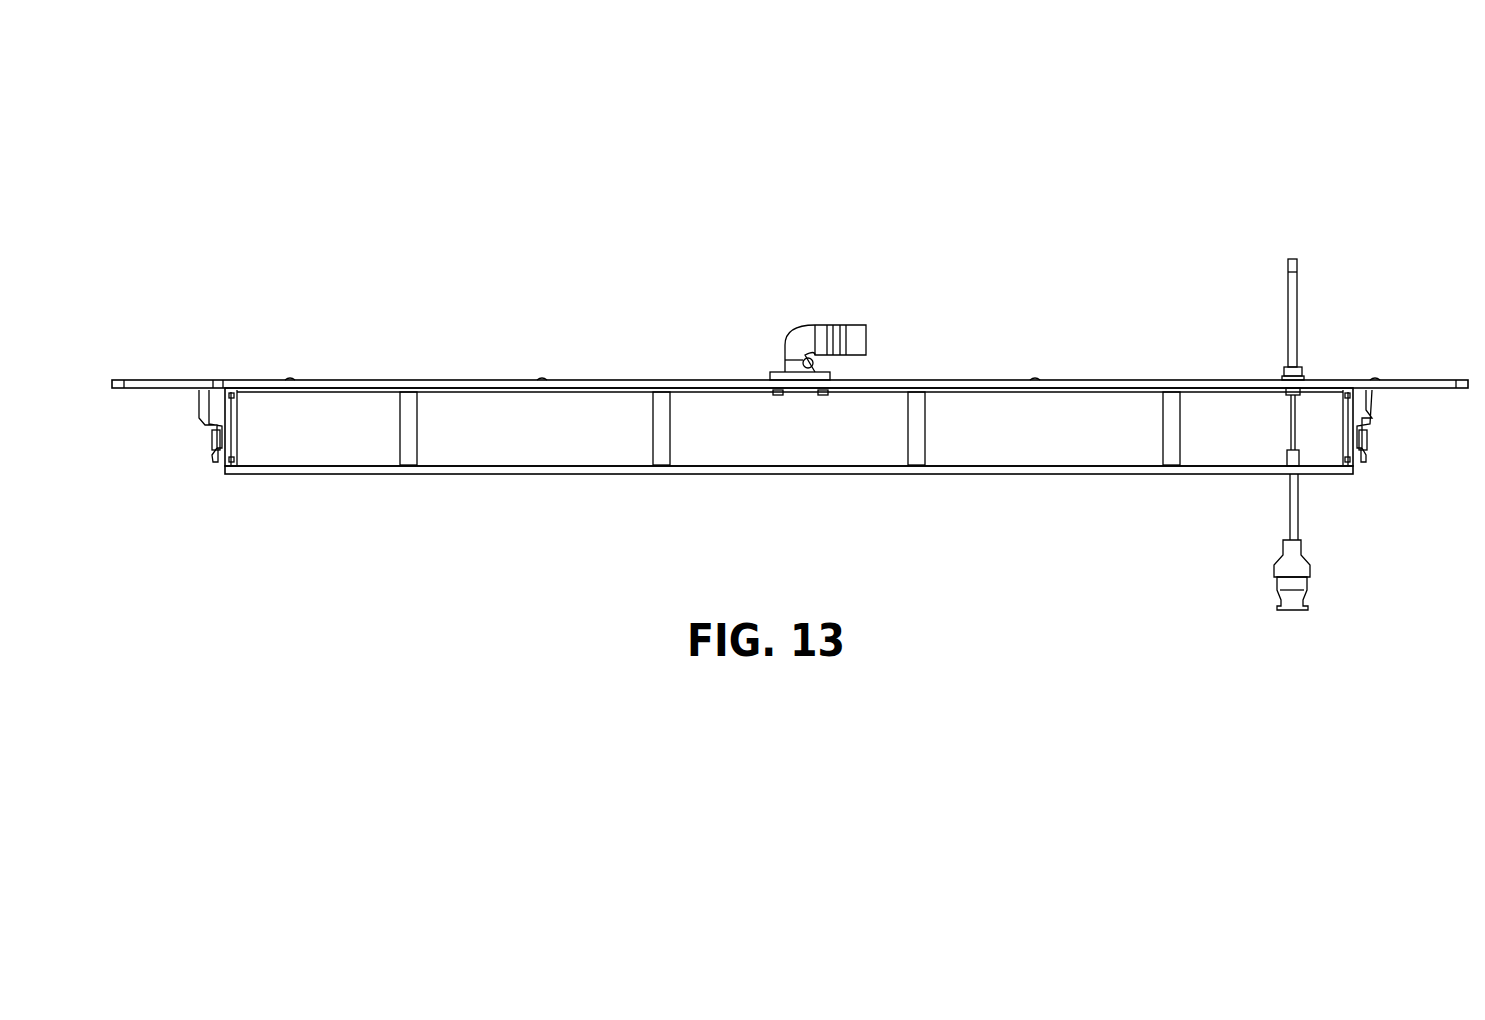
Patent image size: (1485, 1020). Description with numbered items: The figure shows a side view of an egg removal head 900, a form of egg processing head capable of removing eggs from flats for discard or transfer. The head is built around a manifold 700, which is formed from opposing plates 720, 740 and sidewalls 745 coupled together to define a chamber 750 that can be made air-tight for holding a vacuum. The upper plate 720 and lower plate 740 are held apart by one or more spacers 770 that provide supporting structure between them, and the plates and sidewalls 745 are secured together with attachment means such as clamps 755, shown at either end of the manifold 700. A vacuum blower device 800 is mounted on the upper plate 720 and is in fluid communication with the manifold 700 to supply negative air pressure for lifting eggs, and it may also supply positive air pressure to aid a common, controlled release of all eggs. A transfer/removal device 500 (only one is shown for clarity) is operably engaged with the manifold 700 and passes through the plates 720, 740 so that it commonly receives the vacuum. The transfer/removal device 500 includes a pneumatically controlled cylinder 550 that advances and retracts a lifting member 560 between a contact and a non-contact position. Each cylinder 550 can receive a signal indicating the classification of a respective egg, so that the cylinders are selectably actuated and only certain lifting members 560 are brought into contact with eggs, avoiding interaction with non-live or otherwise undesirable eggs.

The egg removal head 900 is at (232, 200).
The plate 720 is at (152, 380).
The manifold 700 is at (1068, 435).
The plate 740 is at (343, 470).
The spacer 770 is at (398, 415).
The chamber 750 is at (437, 433).
The clamp 755 is at (200, 416).
The sidewall 745 is at (231, 455).
The vacuum blower device 800 is at (805, 318).
The transfer/removal device 500 is at (1275, 322).
The pneumatically controlled cylinder 550 is at (1295, 320).
The lifting member 560 is at (1310, 585).